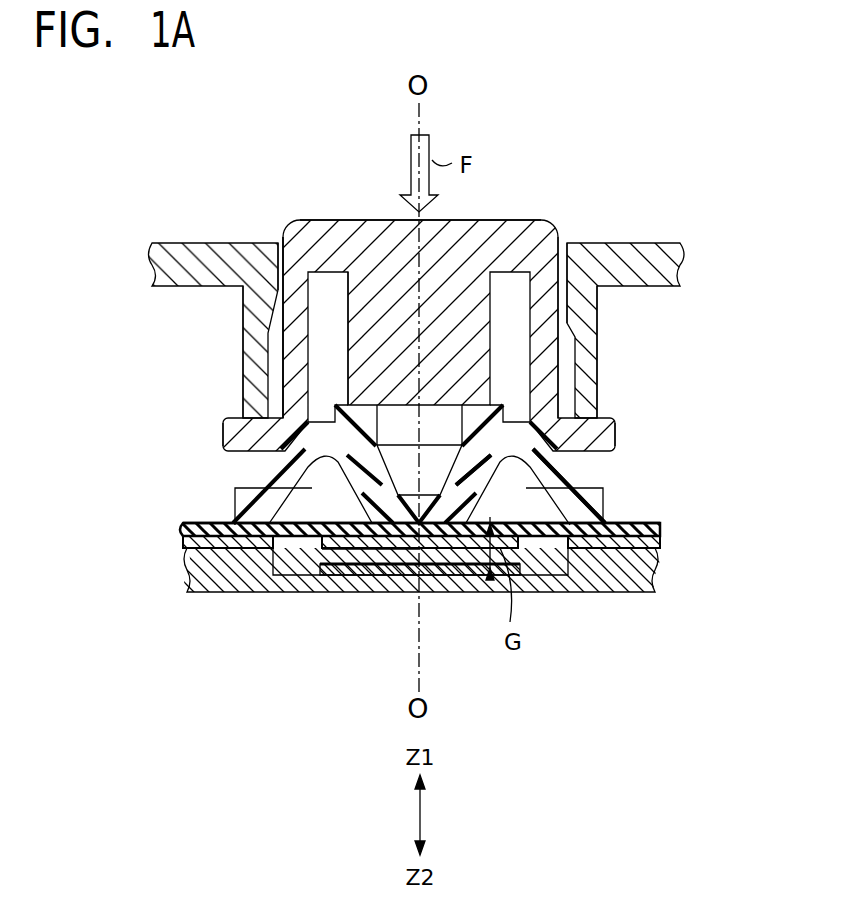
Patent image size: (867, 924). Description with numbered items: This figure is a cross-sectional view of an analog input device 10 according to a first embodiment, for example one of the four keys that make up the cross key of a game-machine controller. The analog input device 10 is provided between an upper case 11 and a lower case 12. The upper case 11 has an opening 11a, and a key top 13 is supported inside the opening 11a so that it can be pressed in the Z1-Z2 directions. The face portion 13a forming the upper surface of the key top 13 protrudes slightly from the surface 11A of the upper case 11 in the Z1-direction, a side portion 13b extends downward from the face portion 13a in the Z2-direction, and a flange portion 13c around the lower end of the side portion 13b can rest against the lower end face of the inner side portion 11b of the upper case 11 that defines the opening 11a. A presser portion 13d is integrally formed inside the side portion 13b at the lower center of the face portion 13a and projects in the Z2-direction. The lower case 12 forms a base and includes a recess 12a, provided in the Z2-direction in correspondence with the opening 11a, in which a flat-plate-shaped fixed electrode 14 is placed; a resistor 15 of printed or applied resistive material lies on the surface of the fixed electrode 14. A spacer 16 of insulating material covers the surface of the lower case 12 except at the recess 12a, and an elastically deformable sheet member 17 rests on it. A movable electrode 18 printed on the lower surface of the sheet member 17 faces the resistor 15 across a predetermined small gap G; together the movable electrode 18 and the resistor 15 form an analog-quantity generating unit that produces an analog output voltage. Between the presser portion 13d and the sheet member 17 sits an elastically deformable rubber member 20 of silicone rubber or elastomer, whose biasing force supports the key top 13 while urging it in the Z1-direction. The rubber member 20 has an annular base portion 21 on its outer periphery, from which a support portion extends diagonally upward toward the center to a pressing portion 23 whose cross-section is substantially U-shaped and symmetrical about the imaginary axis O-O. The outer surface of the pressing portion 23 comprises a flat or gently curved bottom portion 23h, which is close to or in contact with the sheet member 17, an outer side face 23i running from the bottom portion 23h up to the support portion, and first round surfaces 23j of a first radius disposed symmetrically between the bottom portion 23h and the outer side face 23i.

The analog input device 10 is at (296, 210).
The upper case 11 is at (684, 264).
The surface of the upper case 11A is at (667, 229).
The opening 11a is at (568, 229).
The inner side portion 11b is at (243, 410).
The lower case 12 is at (630, 571).
The recess 12a is at (464, 560).
The key top 13 is at (520, 220).
The face portion 13a is at (352, 220).
The side portion 13b is at (290, 370).
The flange portion 13c is at (230, 433).
The presser portion 13d is at (360, 320).
The fixed electrode 14 is at (533, 548).
The resistor 15 is at (343, 550).
The spacer 16 is at (177, 547).
The sheet member 17 is at (198, 523).
The movable electrode 18 is at (392, 550).
The rubber member 20 is at (476, 530).
The annular base portion 21 is at (593, 508).
The pressing portion 23 is at (308, 524).
The bottom portion 23h is at (432, 542).
The outer side face 23i is at (495, 472).
The first round surfaces 23j is at (518, 508).